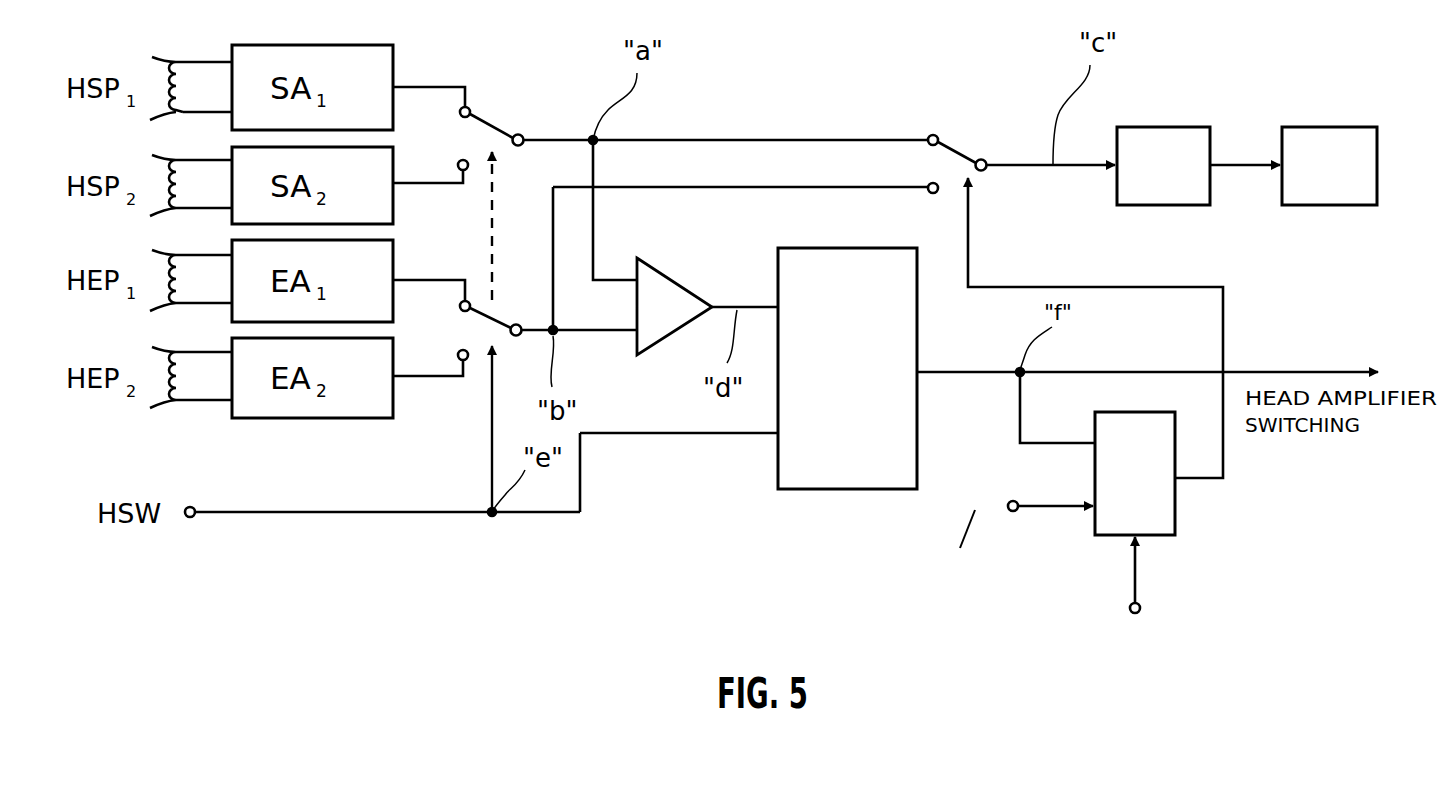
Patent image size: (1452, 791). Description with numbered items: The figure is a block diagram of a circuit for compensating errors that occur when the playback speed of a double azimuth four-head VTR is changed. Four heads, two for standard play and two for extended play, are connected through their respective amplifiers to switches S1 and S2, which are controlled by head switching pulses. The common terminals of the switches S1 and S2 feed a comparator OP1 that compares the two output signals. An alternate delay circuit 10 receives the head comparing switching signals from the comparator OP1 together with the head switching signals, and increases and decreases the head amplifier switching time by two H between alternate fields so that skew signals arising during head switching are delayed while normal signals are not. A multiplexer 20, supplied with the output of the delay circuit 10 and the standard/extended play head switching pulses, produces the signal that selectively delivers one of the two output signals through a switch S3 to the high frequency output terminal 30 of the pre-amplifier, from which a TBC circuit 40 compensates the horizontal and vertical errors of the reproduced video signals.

The alternate delay circuit 10 is at (852, 490).
The multiplexer 20 is at (1177, 508).
The high frequency output terminal of a pre-amplifier 30 is at (1198, 166).
The TBC (Time Base Correction) circuit 40 is at (1329, 166).
The switch S1 is at (486, 122).
The switch S2 is at (497, 327).
The third switch S3 is at (958, 157).
The comparator OP1 is at (690, 252).